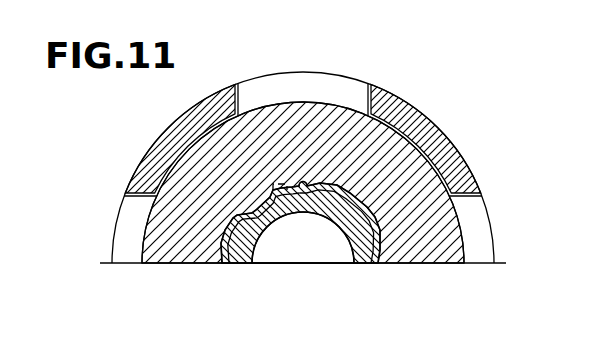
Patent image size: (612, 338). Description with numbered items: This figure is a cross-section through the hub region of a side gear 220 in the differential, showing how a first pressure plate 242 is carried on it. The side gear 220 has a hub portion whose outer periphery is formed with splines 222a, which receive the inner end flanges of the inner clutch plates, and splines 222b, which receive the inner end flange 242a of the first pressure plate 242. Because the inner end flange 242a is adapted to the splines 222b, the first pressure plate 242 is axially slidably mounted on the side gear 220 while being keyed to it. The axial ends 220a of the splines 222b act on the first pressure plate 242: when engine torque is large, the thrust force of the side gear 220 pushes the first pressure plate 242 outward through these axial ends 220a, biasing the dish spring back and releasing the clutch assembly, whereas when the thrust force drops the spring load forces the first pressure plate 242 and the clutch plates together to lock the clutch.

The side gear 220 is at (362, 240).
The axial ends of the splines 220a is at (278, 182).
The splines 222a is at (230, 242).
The splines 222b is at (300, 192).
The first pressure plate 242 is at (178, 243).
The inner end flange 242a is at (256, 213).